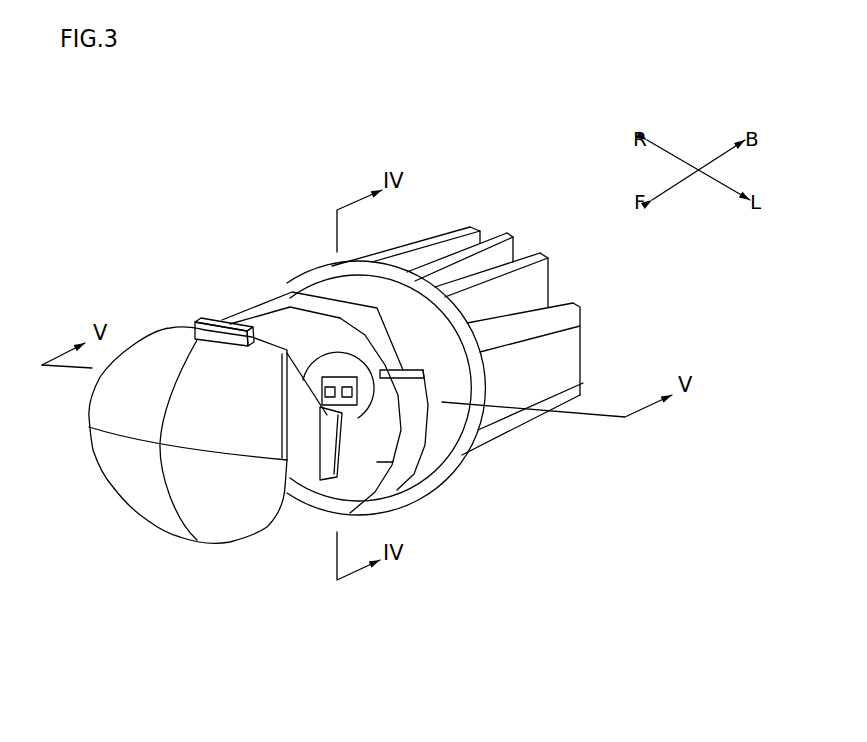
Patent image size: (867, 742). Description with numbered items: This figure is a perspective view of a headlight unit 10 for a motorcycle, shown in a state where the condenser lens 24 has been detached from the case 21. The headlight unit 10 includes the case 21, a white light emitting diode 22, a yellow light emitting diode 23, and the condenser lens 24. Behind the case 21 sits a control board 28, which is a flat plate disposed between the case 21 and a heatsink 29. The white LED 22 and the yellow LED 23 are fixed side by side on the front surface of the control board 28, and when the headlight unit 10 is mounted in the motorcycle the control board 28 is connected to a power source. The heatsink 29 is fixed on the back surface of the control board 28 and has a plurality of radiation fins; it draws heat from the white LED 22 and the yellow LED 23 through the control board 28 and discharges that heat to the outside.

The headlight unit 10 is at (183, 152).
The case 21 is at (417, 417).
The white light emitting diode 22 is at (343, 384).
The yellow light emitting diode 23 is at (331, 384).
The condenser lens 24 is at (153, 487).
The control board 28 is at (343, 405).
The heatsink 29 is at (548, 313).